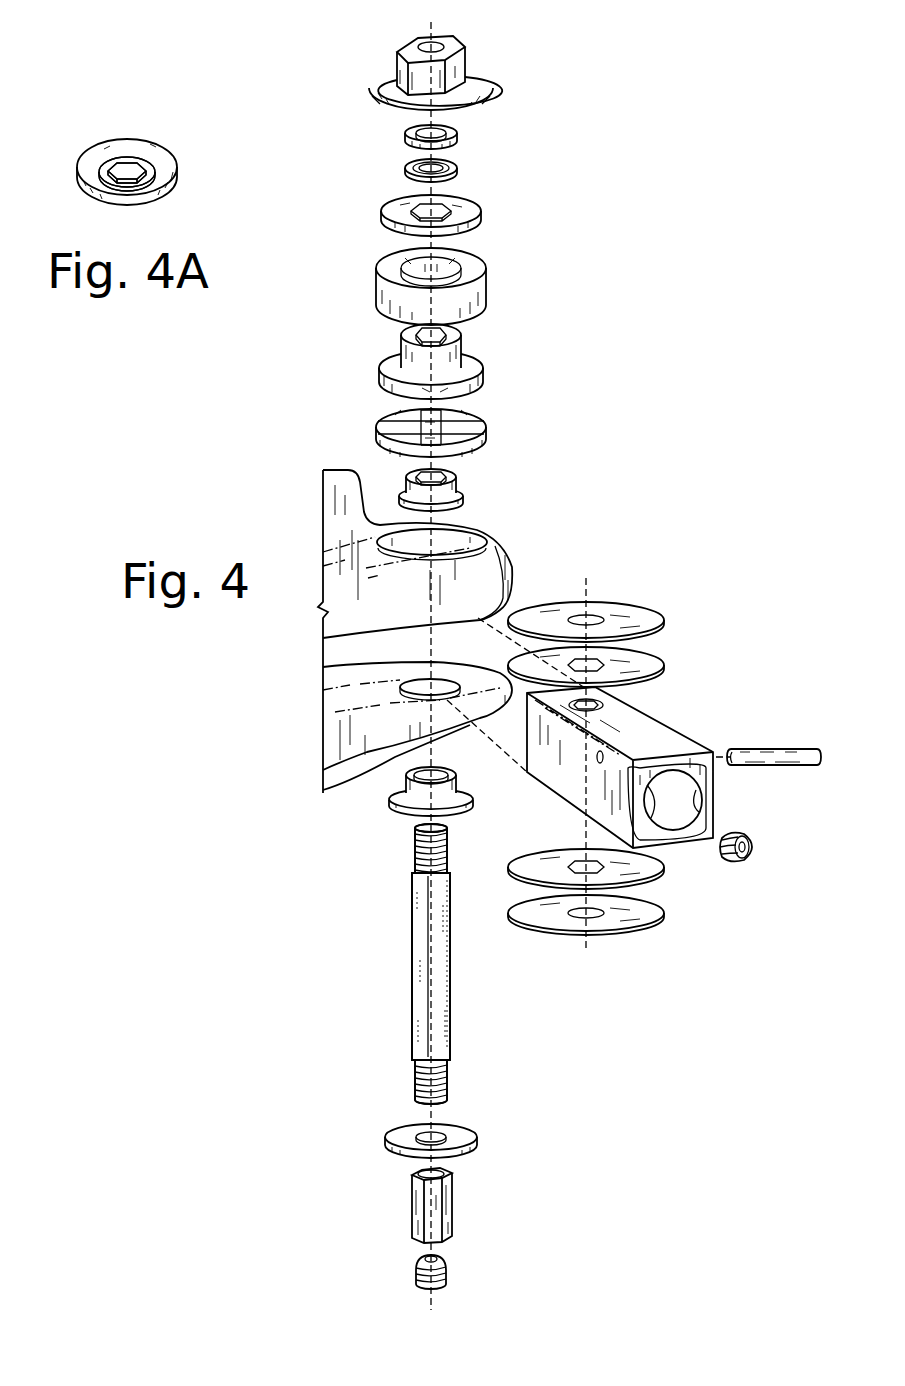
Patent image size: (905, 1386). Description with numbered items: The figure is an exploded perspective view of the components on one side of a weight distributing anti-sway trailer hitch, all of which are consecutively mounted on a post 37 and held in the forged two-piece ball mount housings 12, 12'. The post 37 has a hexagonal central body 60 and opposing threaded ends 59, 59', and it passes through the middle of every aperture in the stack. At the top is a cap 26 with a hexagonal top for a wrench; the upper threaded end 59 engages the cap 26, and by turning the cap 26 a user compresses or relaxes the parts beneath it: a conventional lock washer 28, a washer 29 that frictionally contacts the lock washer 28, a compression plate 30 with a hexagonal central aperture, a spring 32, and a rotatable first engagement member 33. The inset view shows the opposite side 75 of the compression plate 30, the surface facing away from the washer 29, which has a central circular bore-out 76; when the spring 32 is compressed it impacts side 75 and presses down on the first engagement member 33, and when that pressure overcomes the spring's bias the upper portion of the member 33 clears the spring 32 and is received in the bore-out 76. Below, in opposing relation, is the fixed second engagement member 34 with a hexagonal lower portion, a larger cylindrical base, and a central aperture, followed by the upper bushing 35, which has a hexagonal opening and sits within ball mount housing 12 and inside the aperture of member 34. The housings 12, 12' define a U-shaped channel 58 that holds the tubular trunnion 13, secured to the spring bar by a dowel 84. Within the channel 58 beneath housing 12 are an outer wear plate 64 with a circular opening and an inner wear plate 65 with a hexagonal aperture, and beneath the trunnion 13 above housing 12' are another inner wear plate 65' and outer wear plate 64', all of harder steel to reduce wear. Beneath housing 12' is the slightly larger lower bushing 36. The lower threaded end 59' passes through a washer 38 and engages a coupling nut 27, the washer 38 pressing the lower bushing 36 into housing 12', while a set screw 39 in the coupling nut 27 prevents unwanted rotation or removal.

In FIG. 4, the ball mount housing 12 is at (445, 554).
In FIG. 4, the ball mount housing 12' is at (417, 726).
In FIG. 4, the tubular trunnion 13 is at (603, 796).
In FIG. 4, the cap 26 is at (487, 84).
In FIG. 4, the coupling nut 27 is at (453, 1205).
In FIG. 4, the lock washer 28 is at (452, 138).
In FIG. 4, the washer 29 is at (456, 172).
In FIG. 4A, the compression plate 30 is at (181, 178).
In FIG. 4, the compression plate 30 is at (480, 215).
In FIG. 4, the spring 32 is at (487, 281).
In FIG. 4, the rotatable first engagement member 33 is at (484, 356).
In FIG. 4, the fixed second engagement member 34 is at (482, 424).
In FIG. 4, the upper bushing 35 is at (460, 486).
In FIG. 4, the lower bushing 36 is at (388, 800).
In FIG. 4, the post 37 is at (452, 970).
In FIG. 4, the washer 38 is at (476, 1137).
In FIG. 4, the set screw 39 is at (448, 1275).
In FIG. 4, the U-shaped channel 58 is at (351, 653).
In FIG. 4, the threaded end 59 is at (398, 848).
In FIG. 4, the threaded end 59' is at (398, 1082).
In FIG. 4, the hexagonal central body 60 is at (418, 916).
In FIG. 4, the outer wear plate 64 is at (620, 619).
In FIG. 4, the outer wear plate 64' is at (622, 918).
In FIG. 4, the inner wear plate 65 is at (620, 665).
In FIG. 4, the inner wear plate 65' is at (622, 871).
In FIG. 4A, the opposite side 75 is at (90, 181).
In FIG. 4A, the central circular bore-out 76 is at (107, 188).
In FIG. 4, the dowel 84 is at (777, 748).